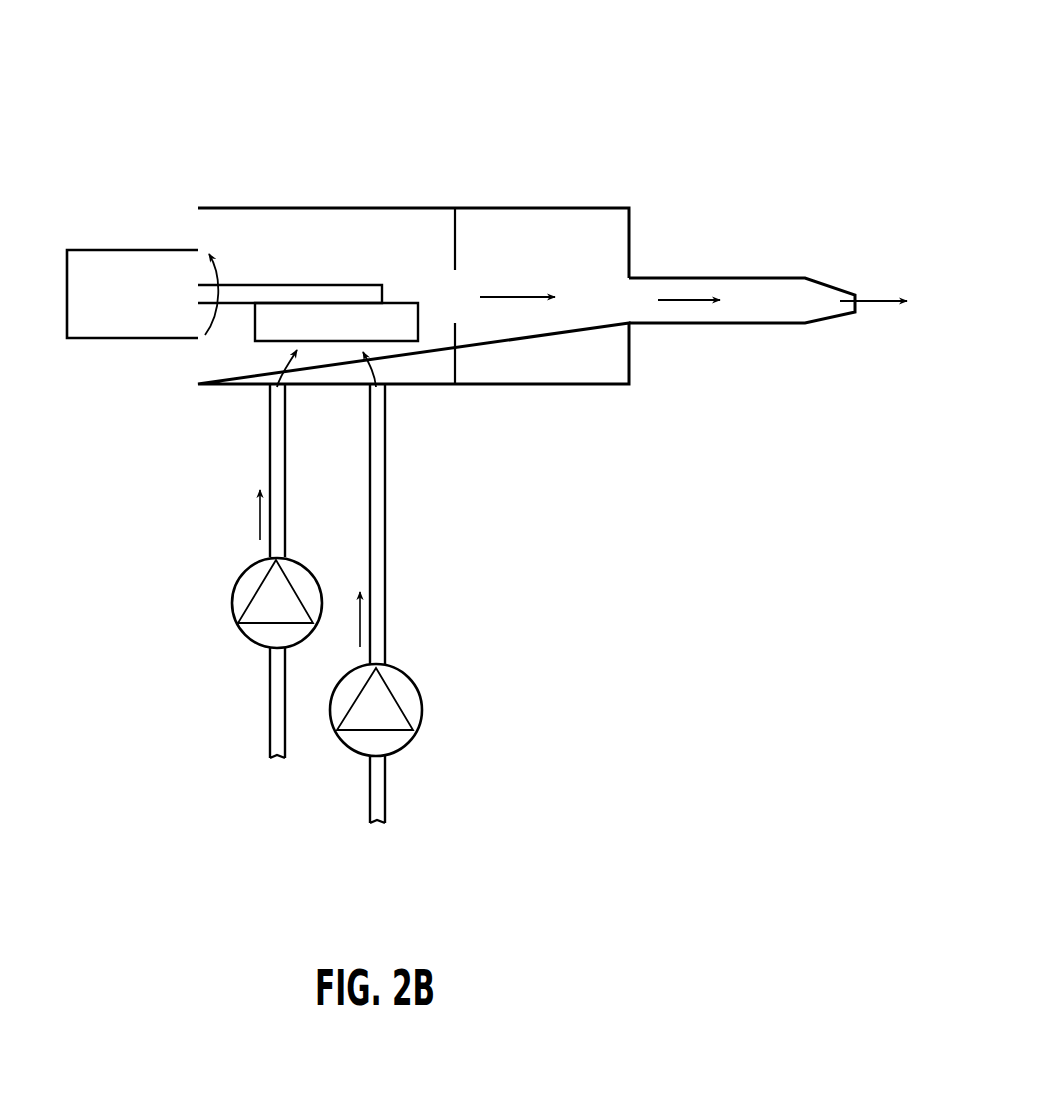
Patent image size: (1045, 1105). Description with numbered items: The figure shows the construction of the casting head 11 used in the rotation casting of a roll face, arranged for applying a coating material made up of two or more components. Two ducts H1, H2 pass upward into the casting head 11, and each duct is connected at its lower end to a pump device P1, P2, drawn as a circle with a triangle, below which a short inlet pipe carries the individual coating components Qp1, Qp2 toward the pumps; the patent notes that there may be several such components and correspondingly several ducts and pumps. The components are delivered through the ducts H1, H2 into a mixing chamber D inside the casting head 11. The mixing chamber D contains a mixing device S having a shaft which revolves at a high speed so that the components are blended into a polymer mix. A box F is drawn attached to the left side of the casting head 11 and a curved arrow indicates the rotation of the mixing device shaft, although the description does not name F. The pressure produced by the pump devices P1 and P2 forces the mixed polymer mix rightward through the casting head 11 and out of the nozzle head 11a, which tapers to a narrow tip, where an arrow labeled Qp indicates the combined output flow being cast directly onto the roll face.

The casting head 11 is at (374, 122).
The nozzle head 11a is at (725, 280).
The feed unit F is at (127, 267).
The mixing chamber D is at (292, 238).
The mixing device S is at (395, 282).
The duct H1 is at (383, 433).
The duct H2 is at (272, 430).
The pump device P1 is at (413, 703).
The pump device P2 is at (233, 592).
The output flow Qp is at (868, 300).
The component Qp1 is at (273, 690).
The component Qp2 is at (380, 783).